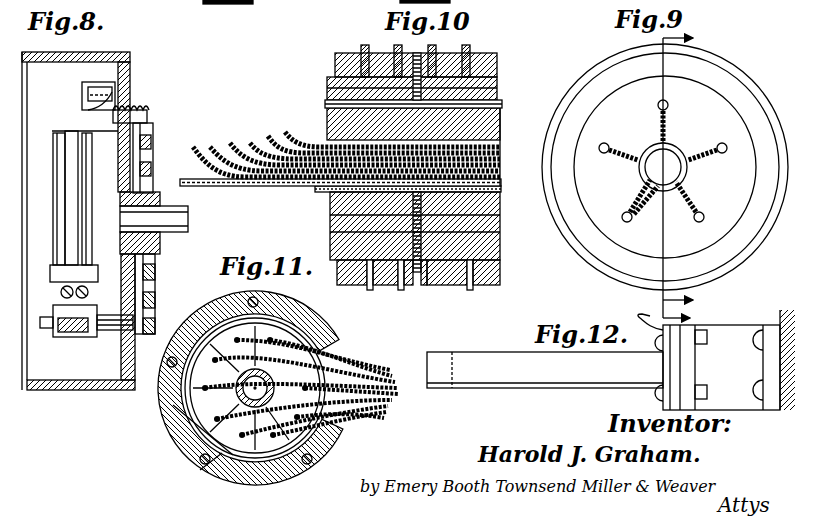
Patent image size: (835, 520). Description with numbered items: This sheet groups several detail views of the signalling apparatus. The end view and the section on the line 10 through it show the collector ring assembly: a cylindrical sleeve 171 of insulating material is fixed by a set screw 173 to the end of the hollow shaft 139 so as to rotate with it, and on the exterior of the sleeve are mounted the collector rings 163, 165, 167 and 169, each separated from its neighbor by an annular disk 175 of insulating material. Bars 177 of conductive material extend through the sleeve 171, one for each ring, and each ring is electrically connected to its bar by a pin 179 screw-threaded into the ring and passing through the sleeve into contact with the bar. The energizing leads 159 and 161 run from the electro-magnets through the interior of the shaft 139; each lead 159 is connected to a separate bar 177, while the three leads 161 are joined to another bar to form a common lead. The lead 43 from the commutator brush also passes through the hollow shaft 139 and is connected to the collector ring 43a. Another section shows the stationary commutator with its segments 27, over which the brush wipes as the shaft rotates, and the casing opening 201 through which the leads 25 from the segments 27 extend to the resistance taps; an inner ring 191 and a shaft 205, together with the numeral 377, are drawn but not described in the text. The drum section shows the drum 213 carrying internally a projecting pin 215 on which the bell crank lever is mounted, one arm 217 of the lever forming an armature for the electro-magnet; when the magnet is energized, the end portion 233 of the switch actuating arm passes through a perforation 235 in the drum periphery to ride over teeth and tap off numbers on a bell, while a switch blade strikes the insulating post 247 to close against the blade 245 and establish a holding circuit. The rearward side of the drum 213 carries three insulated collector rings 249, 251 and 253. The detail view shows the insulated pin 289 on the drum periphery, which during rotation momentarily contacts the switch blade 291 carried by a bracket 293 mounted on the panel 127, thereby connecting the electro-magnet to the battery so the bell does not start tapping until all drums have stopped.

In FIG. 9, the section line 10— 10 is at (693, 157).
In FIG. 12, the section line 10— 10 is at (693, 306).
In FIG. 11, the leads 25 is at (360, 372).
In FIG. 11, the segments 27 is at (178, 397).
In FIG. 10, the lead 43 is at (290, 186).
In FIG. 9, the lead 43 is at (684, 186).
In FIG. 10, the collector ring 43a is at (486, 270).
In FIG. 9, the collector ring 43a is at (735, 80).
In FIG. 12, the panel 127 is at (790, 312).
In FIG. 10, the shaft 139 is at (330, 210).
In FIG. 11, the shaft 139 is at (205, 404).
In FIG. 9, the shaft 139 is at (670, 140).
In FIG. 10, the energizing leads 159 is at (211, 147).
In FIG. 9, the energizing leads 159 is at (625, 152).
In FIG. 10, the energizing leads 161 is at (190, 147).
In FIG. 9, the energizing leads 161 is at (636, 196).
In FIG. 10, the collector ring 163 is at (426, 272).
In FIG. 10, the collector ring 165 is at (388, 276).
In FIG. 10, the collector ring 167 is at (355, 271).
In FIG. 10, the collector ring 169 is at (464, 276).
In FIG. 10, the cylindrical sleeve 171 is at (497, 82).
In FIG. 9, the cylindrical sleeve 171 is at (722, 107).
In FIG. 10, the set screw 173 is at (500, 236).
In FIG. 10, the annular disk 175 is at (470, 50).
In FIG. 9, the annular disk 175 is at (728, 60).
In FIG. 10, the bars 177 is at (502, 102).
In FIG. 9, the bars 177 is at (658, 103).
In FIG. 10, the pin 179 is at (330, 84).
In FIG. 11, the inner ring 191 is at (340, 430).
In FIG. 11, the opening 201 is at (320, 348).
In FIG. 8, the shaft 205 is at (172, 222).
In FIG. 8, the drum 213 is at (135, 355).
In FIG. 8, the projecting pin 215 is at (100, 322).
In FIG. 8, the arm 217 is at (75, 337).
In FIG. 8, the end portion 233 is at (112, 92).
In FIG. 8, the perforation 235 is at (114, 82).
In FIG. 8, the spring blade 245 is at (70, 131).
In FIG. 8, the post 247 is at (60, 134).
In FIG. 8, the collector ring 249 is at (152, 322).
In FIG. 8, the collector ring 251 is at (152, 298).
In FIG. 8, the collector ring 253 is at (152, 275).
In FIG. 12, the pin 289 is at (437, 390).
In FIG. 12, the switch blade 291 is at (582, 377).
In FIG. 12, the bracket 293 is at (730, 333).
In FIG. 10, the lead 377 is at (237, 4).
In FIG. 9, the lead 377 is at (588, 0).